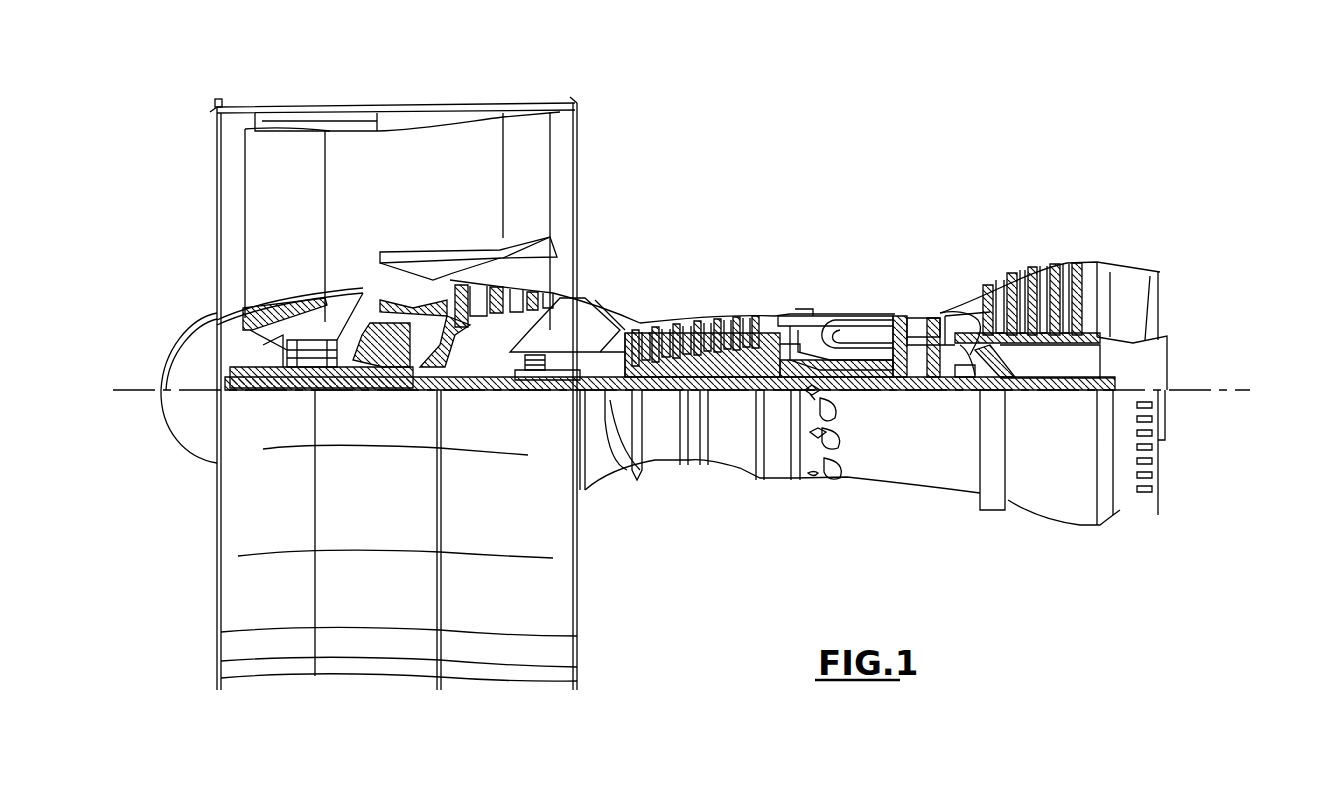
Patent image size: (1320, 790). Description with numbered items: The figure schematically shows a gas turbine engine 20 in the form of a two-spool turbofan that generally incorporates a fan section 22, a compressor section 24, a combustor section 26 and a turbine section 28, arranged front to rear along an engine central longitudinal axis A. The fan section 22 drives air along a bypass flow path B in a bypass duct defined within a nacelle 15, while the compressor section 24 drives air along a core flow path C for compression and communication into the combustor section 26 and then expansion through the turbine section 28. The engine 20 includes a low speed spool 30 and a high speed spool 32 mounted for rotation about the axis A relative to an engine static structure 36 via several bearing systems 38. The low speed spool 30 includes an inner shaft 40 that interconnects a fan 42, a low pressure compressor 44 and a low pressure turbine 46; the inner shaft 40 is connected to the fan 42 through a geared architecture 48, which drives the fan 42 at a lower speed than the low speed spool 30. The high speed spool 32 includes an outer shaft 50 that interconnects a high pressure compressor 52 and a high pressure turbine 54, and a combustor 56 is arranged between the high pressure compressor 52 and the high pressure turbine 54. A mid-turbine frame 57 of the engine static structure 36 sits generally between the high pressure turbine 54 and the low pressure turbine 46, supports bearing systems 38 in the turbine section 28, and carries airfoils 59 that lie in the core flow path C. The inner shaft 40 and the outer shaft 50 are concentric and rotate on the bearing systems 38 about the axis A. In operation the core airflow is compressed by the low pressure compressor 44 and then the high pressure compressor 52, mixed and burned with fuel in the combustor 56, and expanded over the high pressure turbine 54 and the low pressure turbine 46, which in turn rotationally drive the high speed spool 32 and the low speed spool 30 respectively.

The nacelle 15 is at (399, 112).
The gas turbine engine 20 is at (856, 156).
The fan section 22 is at (330, 95).
The compressor section 24 is at (625, 302).
The combustor section 26 is at (844, 280).
The turbine section 28 is at (995, 252).
The low speed spool 30 is at (738, 405).
The high speed spool 32 is at (780, 355).
The engine static structure 36 is at (776, 485).
The bearing systems 38 is at (541, 380).
The inner shaft 40 is at (603, 400).
The fan 42 is at (297, 235).
The low pressure compressor 44 is at (515, 300).
The low pressure turbine 46 is at (1045, 272).
The geared architecture 48 is at (405, 370).
The outer shaft 50 is at (860, 392).
The high pressure compressor 52 is at (712, 360).
The high pressure turbine 54 is at (920, 325).
The combustor 56 is at (850, 332).
The mid-turbine frame 57 is at (960, 299).
The airfoils 59 is at (985, 360).
The engine central longitudinal axis A is at (1245, 390).
The bypass flow path B is at (350, 181).
The core flow path C is at (385, 283).